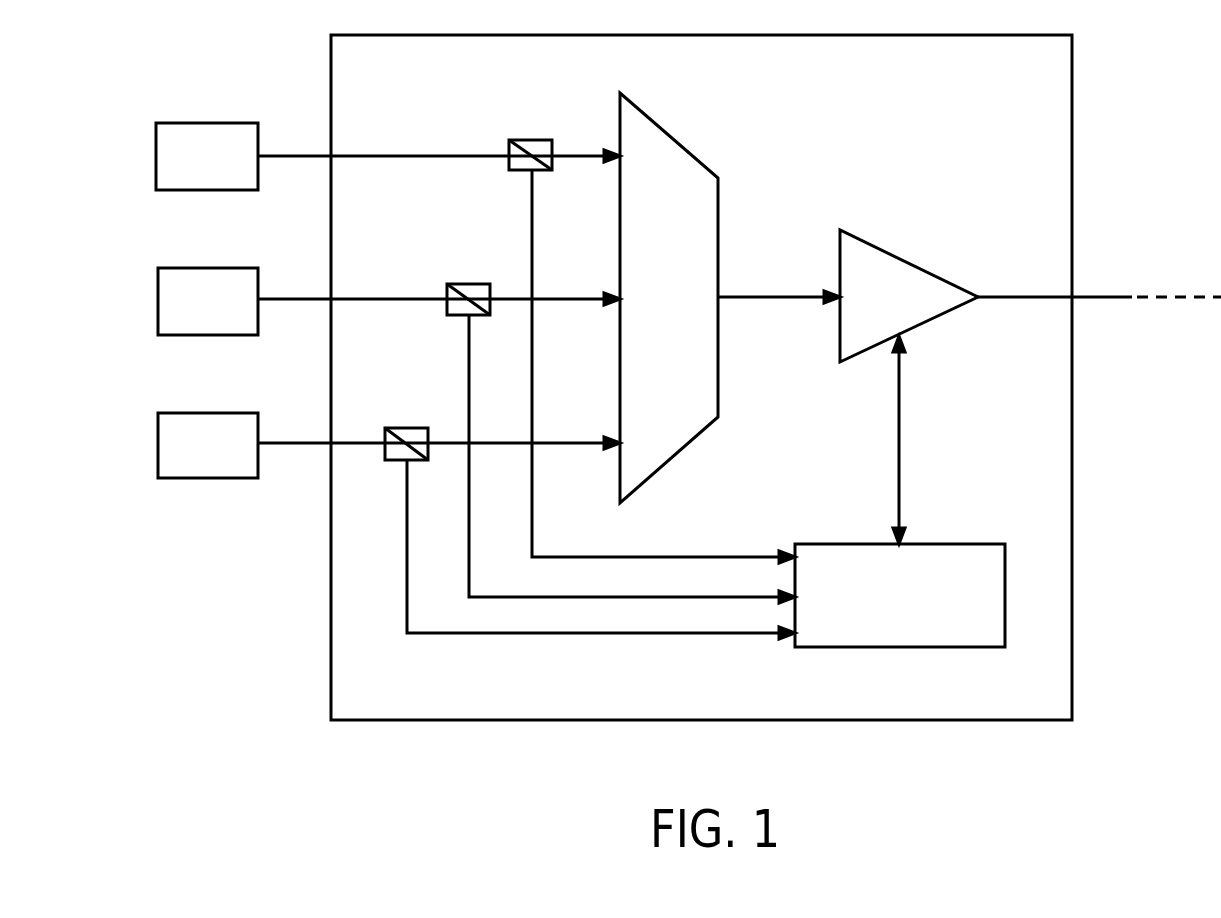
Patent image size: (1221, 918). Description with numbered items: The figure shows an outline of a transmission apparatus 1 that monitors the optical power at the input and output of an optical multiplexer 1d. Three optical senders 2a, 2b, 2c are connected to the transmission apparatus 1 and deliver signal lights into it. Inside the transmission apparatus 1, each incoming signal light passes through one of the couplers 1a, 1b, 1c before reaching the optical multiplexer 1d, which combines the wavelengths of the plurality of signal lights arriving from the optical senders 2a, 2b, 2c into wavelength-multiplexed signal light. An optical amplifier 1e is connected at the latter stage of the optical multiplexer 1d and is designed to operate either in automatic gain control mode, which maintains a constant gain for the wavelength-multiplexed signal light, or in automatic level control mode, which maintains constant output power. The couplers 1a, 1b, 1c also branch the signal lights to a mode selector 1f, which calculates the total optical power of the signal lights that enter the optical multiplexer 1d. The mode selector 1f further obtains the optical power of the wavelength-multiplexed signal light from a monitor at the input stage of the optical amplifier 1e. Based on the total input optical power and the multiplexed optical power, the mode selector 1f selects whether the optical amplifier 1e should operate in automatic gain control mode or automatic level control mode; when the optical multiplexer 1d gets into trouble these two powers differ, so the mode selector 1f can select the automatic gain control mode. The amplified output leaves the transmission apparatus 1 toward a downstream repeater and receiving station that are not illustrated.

The transmission apparatus 1 is at (578, 35).
The coupler 1a is at (526, 140).
The coupler 1b is at (463, 284).
The coupler 1c is at (401, 428).
The optical multiplexer 1d is at (666, 133).
The optical amplifier 1e is at (916, 268).
The mode selector 1f is at (956, 544).
The optical sender 2a is at (170, 123).
The optical sender 2b is at (170, 268).
The optical sender 2c is at (170, 413).